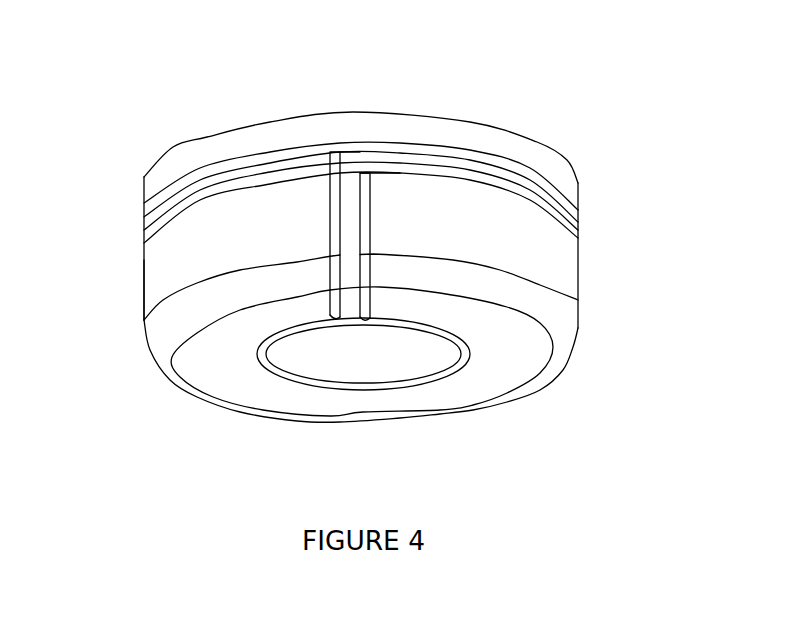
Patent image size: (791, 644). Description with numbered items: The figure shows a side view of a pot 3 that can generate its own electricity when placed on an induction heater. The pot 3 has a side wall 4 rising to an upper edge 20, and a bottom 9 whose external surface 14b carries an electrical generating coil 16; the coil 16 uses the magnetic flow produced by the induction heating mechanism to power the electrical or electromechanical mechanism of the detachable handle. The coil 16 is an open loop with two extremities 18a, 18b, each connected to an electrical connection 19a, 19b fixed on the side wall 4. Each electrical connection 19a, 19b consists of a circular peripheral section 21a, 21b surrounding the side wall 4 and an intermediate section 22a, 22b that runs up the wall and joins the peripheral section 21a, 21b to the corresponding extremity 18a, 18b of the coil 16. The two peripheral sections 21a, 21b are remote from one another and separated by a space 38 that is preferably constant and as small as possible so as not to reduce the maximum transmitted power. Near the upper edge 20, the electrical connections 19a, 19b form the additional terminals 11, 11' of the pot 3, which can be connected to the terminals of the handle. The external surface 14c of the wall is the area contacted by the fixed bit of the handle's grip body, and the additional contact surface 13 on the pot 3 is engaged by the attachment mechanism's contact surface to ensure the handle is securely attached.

The upper edge 20 is at (196, 138).
The pot 3 is at (122, 256).
The side wall 4 is at (580, 289).
The additional terminal 11 is at (361, 146).
The additional terminal 11' is at (372, 181).
The additional contact surface 13 is at (248, 165).
The space 38 is at (150, 202).
The electrical connection 19a is at (326, 251).
The electrical connection 19b is at (469, 267).
The external surface 14c is at (138, 291).
The external surface 14b is at (250, 397).
The electrical generating coil 16 is at (257, 356).
The bottom 9 is at (432, 398).
The intermediate section 22a is at (332, 215).
The intermediate section 22b is at (378, 223).
The peripheral section 21a is at (357, 145).
The peripheral section 21b is at (393, 171).
The extremity 18a is at (343, 318).
The extremity 18b is at (372, 320).